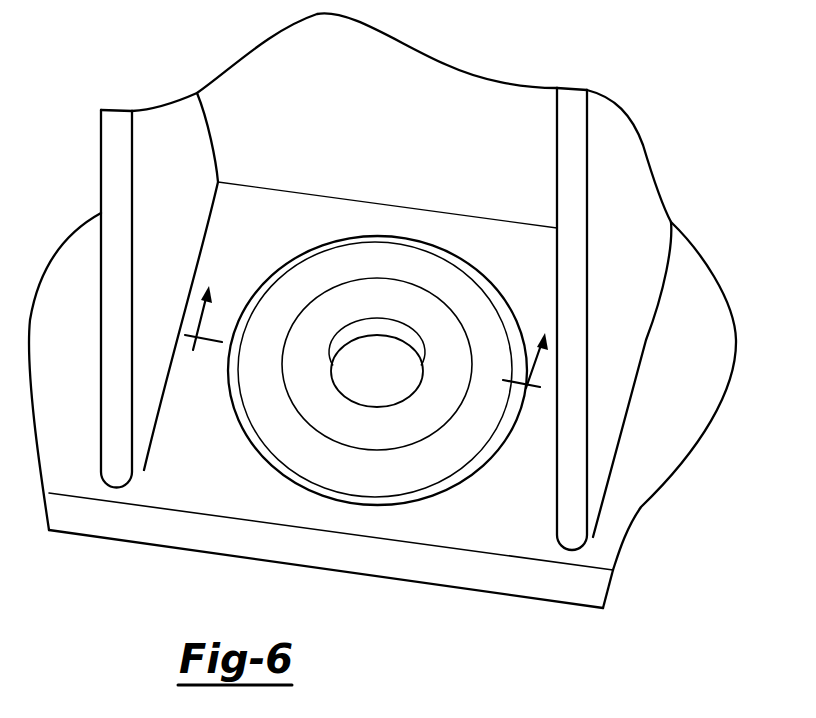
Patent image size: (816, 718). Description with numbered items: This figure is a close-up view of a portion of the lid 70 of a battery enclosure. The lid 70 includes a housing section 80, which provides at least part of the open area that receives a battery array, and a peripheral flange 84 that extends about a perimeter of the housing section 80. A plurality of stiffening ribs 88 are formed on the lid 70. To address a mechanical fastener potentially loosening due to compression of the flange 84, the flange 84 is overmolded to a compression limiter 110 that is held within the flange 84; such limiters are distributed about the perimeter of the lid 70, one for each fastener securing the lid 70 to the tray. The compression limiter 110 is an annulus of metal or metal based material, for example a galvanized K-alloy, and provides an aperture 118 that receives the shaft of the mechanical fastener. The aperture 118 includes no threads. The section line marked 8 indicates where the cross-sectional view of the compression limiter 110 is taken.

The lid 70 is at (641, 455).
The housing section 80 is at (515, 115).
The peripheral flange 84 is at (501, 527).
The stiffening ribs 88 is at (190, 148).
The compression limiter 110 is at (417, 302).
The aperture 118 is at (372, 350).
The section line 8- 8 is at (363, 362).